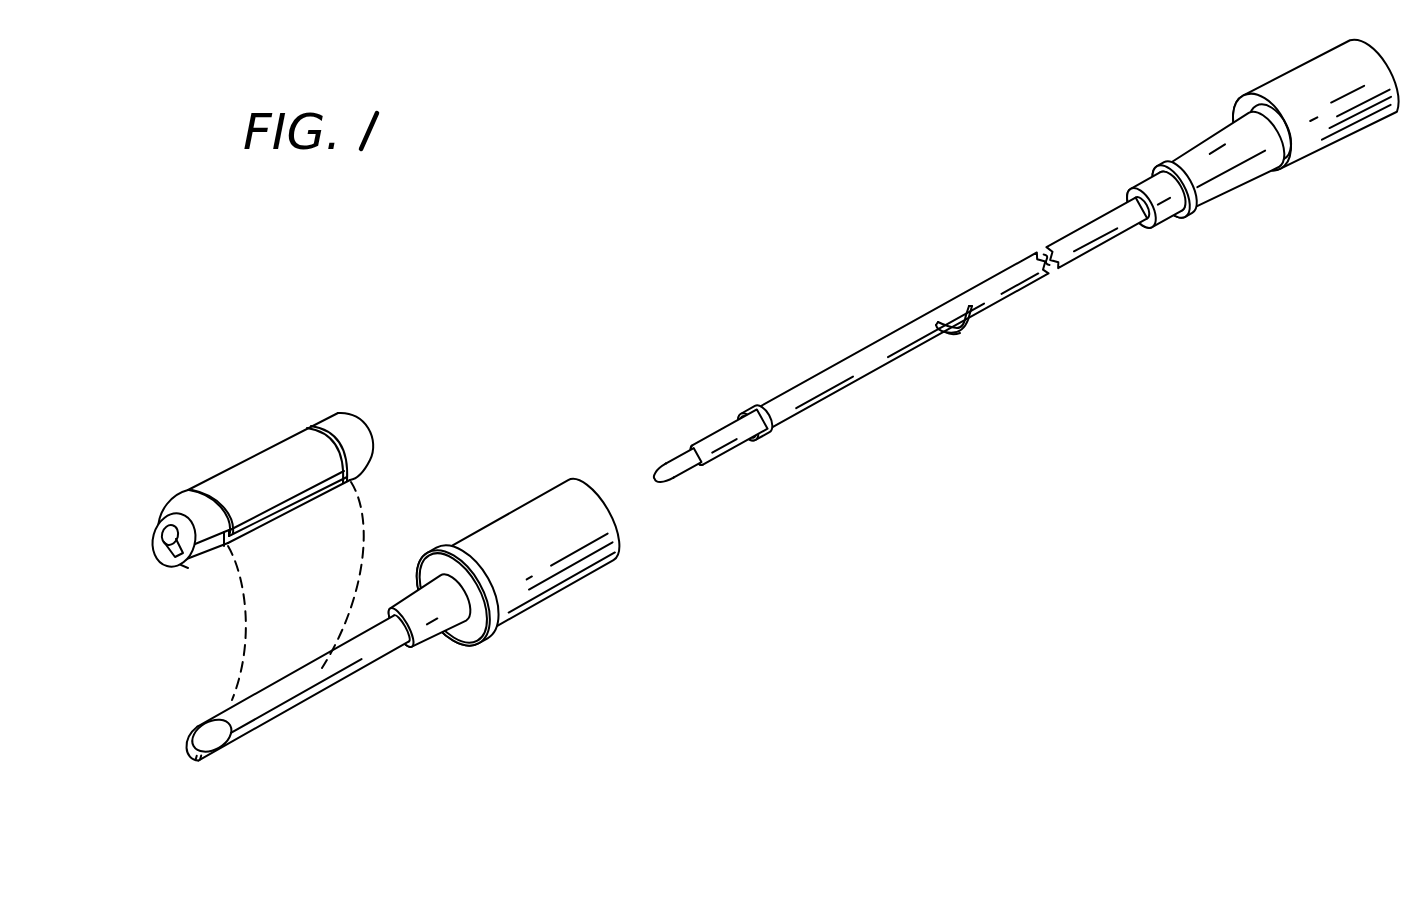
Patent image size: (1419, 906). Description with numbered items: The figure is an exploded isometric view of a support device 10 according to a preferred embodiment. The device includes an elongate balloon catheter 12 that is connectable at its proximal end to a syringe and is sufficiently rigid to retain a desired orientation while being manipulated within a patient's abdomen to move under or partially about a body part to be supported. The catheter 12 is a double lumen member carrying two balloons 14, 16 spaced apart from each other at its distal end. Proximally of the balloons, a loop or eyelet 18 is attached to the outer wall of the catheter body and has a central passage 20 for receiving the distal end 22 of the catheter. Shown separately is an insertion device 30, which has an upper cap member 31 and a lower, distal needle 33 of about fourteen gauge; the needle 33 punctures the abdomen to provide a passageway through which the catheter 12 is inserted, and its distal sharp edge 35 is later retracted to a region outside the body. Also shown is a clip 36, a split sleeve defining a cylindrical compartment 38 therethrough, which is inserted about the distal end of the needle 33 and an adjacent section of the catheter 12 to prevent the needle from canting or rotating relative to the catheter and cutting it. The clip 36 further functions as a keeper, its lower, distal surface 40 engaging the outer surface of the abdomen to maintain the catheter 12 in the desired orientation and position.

The support device 10 is at (748, 366).
The balloon catheter 12 is at (976, 279).
The balloon 14 is at (676, 481).
The balloon 16 is at (773, 428).
The loop or eyelet 18 is at (980, 316).
The central passage 20 is at (965, 329).
The distal end 22 is at (652, 479).
The insertion device 30 is at (443, 643).
The upper cap member 31 is at (553, 578).
The needle 33 is at (317, 680).
The distal sharp edge 35 is at (201, 753).
The clip 36 is at (289, 426).
The cylindrical compartment 38 is at (170, 549).
The distal surface 40 is at (162, 512).